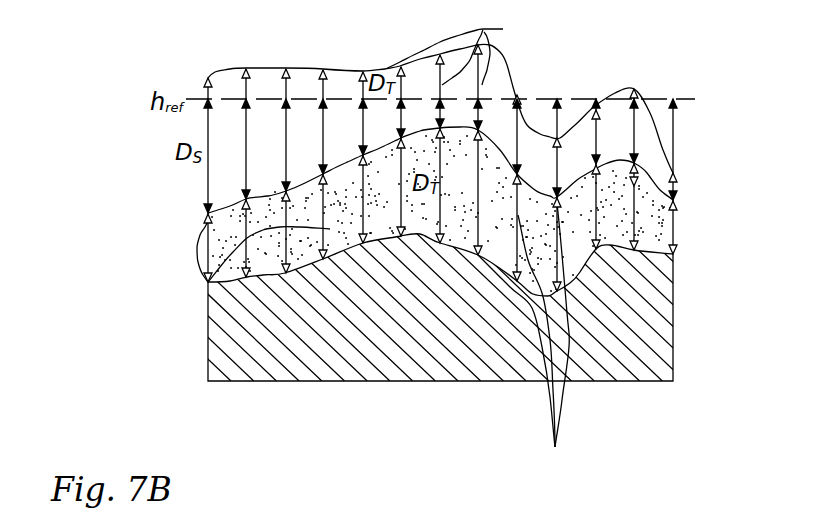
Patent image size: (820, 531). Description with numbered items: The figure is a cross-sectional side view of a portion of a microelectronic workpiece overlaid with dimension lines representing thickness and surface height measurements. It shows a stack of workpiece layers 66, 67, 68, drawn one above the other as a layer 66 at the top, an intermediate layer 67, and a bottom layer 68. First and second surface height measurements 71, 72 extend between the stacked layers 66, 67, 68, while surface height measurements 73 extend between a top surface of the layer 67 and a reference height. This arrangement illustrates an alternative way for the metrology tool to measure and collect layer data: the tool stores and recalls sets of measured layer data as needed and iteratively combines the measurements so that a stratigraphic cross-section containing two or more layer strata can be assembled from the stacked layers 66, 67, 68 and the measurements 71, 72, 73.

The workpiece layer 66 is at (653, 127).
The workpiece layer 67 is at (658, 232).
The workpiece layer 68 is at (658, 328).
The first surface height measurement 71 is at (503, 29).
The second surface height measurement 72 is at (208, 282).
The surface height measurements 73 is at (555, 447).